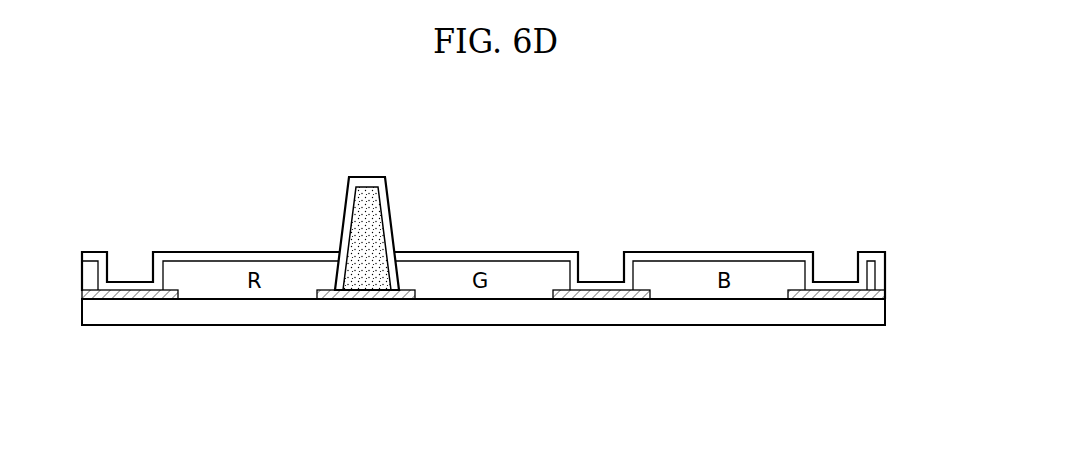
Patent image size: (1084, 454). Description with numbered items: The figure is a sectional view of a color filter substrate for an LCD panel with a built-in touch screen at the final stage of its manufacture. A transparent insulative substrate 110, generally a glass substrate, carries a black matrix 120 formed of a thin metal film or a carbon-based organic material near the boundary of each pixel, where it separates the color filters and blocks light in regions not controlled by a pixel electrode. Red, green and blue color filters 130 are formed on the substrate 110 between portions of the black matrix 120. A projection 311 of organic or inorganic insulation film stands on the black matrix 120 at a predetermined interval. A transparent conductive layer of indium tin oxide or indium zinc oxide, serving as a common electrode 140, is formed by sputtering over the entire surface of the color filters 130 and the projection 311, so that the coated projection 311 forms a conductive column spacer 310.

The transparent insulative substrate 110 is at (843, 315).
The black matrix 120 is at (886, 294).
The color filters 130 is at (780, 265).
The common electrode 140 is at (700, 255).
The conductive column spacer 310 is at (352, 158).
The projection 311 is at (372, 210).